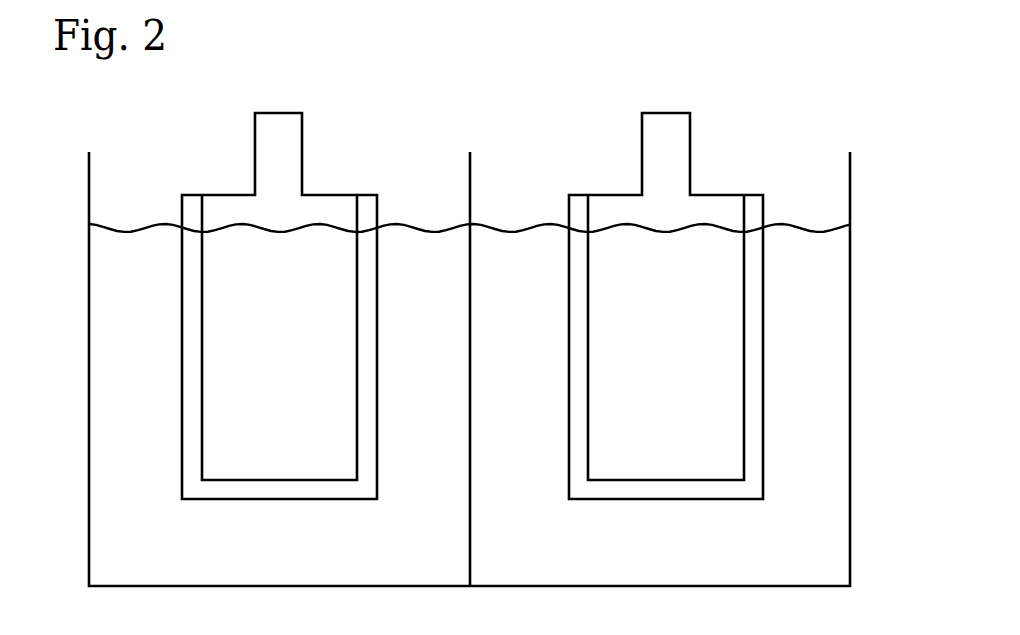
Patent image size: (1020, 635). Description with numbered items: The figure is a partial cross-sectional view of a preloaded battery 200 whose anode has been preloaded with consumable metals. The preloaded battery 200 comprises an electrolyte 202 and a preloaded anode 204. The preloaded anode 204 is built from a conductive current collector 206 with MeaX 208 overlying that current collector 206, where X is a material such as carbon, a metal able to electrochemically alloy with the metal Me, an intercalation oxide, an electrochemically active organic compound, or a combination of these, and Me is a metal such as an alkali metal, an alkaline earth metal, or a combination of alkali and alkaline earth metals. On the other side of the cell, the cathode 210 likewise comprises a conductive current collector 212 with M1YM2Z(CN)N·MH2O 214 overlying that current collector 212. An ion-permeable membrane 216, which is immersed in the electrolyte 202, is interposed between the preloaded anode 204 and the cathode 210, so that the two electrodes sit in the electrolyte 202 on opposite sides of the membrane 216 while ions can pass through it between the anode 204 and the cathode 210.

The preloaded battery 200 is at (201, 93).
The electrolyte 202 is at (397, 564).
The preloaded anode 204 is at (336, 288).
The conductive current collector 206 is at (279, 337).
The MeaX 208 is at (187, 198).
The cathode 210 is at (710, 294).
The conductive current collector 212 is at (688, 364).
The M1YM2Z(CN)N·MH2O 214 is at (582, 195).
The ion-permeable membrane 216 is at (468, 558).